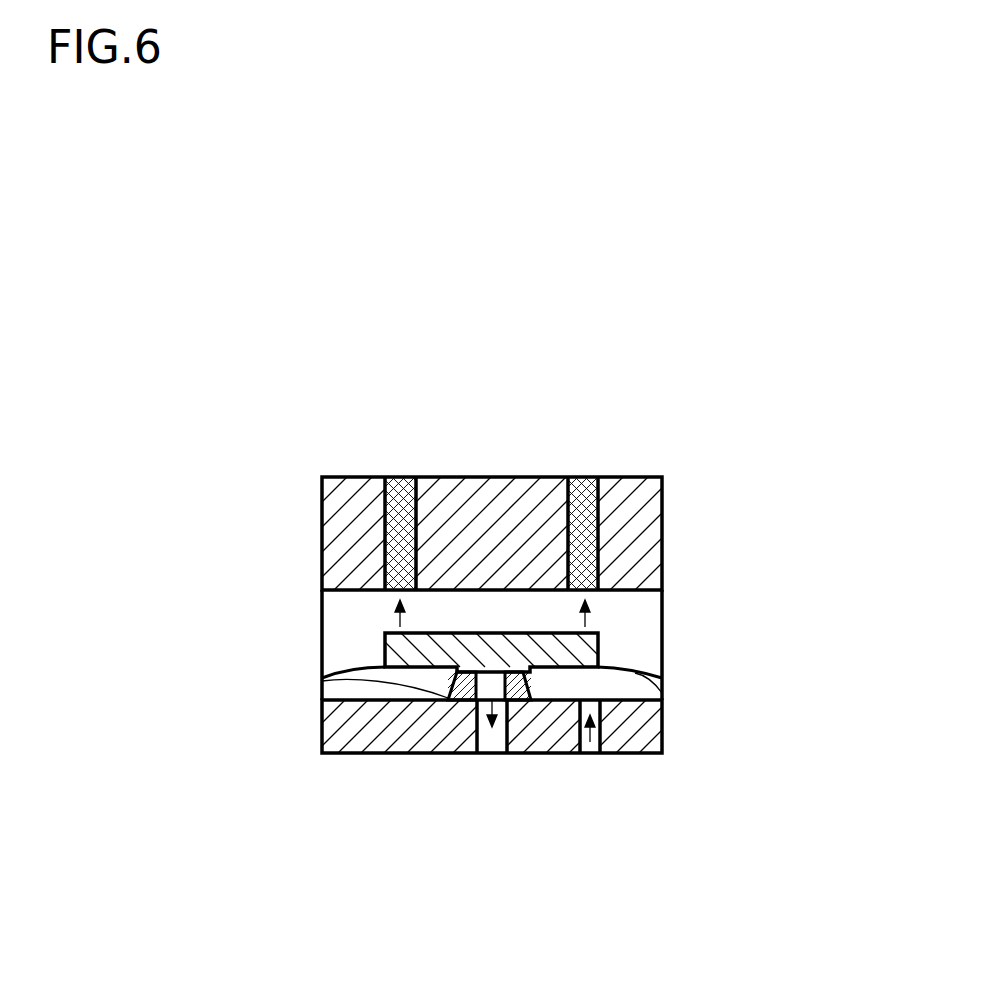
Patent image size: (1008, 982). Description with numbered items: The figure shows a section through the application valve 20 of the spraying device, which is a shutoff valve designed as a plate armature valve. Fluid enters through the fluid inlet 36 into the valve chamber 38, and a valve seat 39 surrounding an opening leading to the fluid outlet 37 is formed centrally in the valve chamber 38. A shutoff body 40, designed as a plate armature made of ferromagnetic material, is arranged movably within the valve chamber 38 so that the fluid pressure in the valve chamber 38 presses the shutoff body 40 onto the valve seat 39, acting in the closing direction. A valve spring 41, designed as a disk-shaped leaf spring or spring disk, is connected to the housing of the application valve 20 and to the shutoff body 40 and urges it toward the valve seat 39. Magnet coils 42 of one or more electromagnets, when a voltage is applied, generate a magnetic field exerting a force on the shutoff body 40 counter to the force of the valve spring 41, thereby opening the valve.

The application valve 20 is at (371, 417).
The fluid inlet 36 is at (590, 758).
The fluid outlet 37 is at (490, 762).
The valve chamber 38 is at (627, 652).
The valve seat 39 is at (322, 684).
The shutoff body 40 is at (385, 633).
The valve spring 41 is at (340, 672).
The magnet coils 42 is at (403, 477).